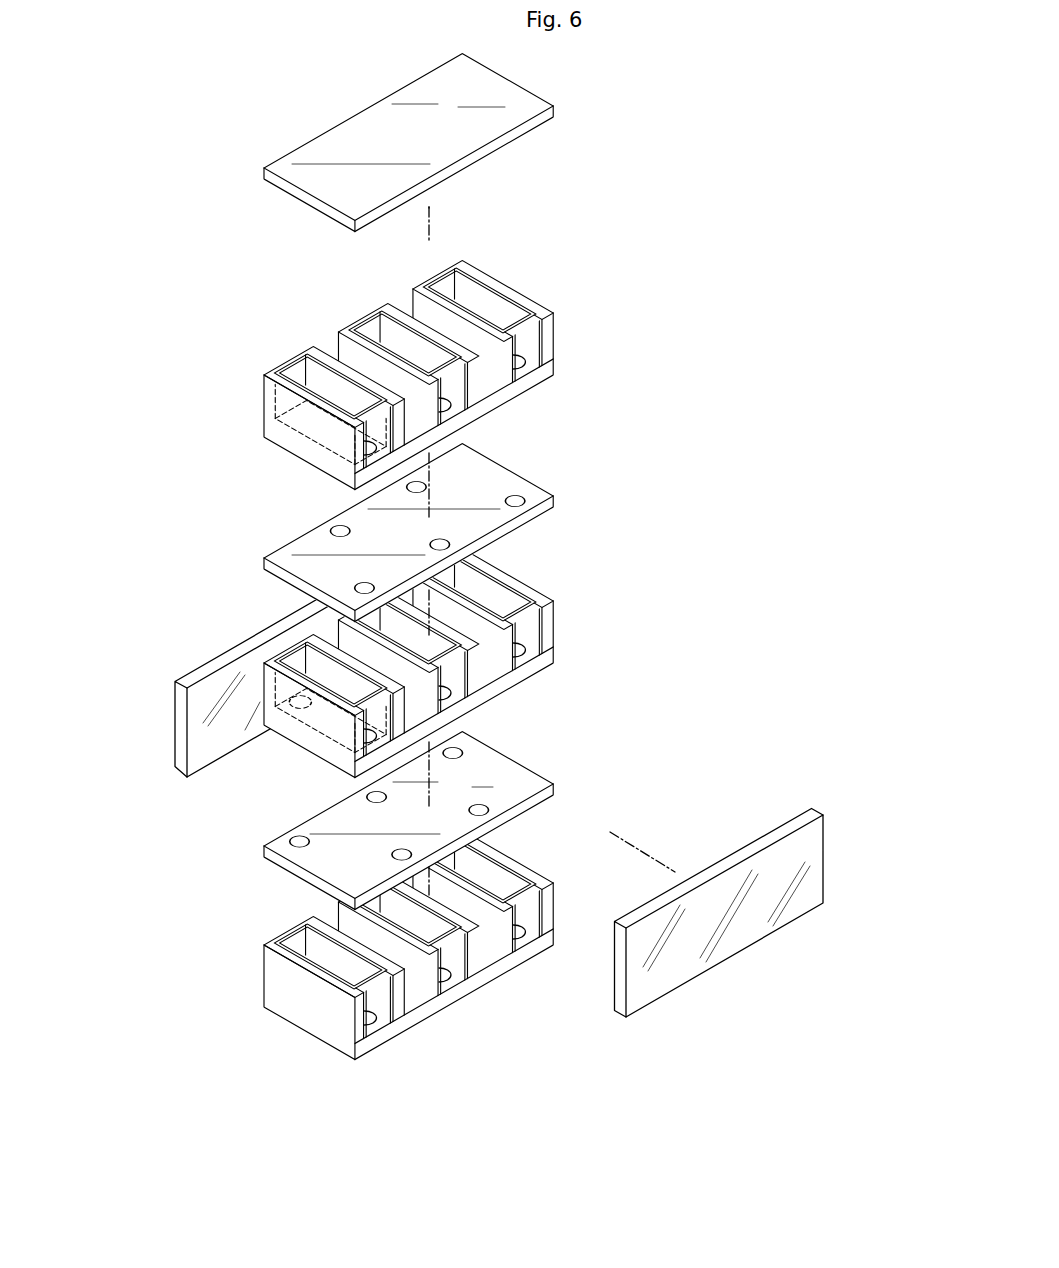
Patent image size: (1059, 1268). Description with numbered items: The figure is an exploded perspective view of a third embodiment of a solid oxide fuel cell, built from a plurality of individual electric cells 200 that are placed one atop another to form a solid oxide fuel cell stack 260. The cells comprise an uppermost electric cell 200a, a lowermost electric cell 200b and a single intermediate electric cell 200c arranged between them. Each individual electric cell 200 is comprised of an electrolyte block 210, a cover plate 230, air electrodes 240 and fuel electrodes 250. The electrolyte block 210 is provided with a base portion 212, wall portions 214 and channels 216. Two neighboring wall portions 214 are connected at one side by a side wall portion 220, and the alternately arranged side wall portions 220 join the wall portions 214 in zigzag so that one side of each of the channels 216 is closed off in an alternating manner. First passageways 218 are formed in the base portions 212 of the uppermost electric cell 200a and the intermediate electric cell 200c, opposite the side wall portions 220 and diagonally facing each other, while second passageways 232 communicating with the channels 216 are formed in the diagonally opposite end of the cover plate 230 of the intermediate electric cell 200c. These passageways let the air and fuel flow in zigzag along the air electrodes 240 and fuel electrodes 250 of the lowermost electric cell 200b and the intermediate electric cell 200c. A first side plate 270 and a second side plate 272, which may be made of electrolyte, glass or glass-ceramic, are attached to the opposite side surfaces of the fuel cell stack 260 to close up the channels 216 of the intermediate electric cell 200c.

The individual electric cell 200 is at (462, 557).
The uppermost electric cell 200a is at (506, 410).
The lowermost electric cell 200b is at (527, 877).
The intermediate electric cell 200c is at (562, 638).
The electrolyte block 210 is at (425, 655).
The base portion 212 is at (550, 390).
The wall portion 214 is at (490, 325).
The channel 216 is at (526, 357).
The first passageway 218 is at (356, 442).
The side wall portion 220 is at (303, 361).
The cover plate 230 is at (387, 470).
The second passageway 232 is at (333, 528).
The air electrode 240 is at (367, 323).
The fuel electrode 250 is at (440, 300).
The solid oxide fuel cell stack 260 is at (203, 427).
The first side plate 270 is at (733, 940).
The second side plate 272 is at (186, 721).